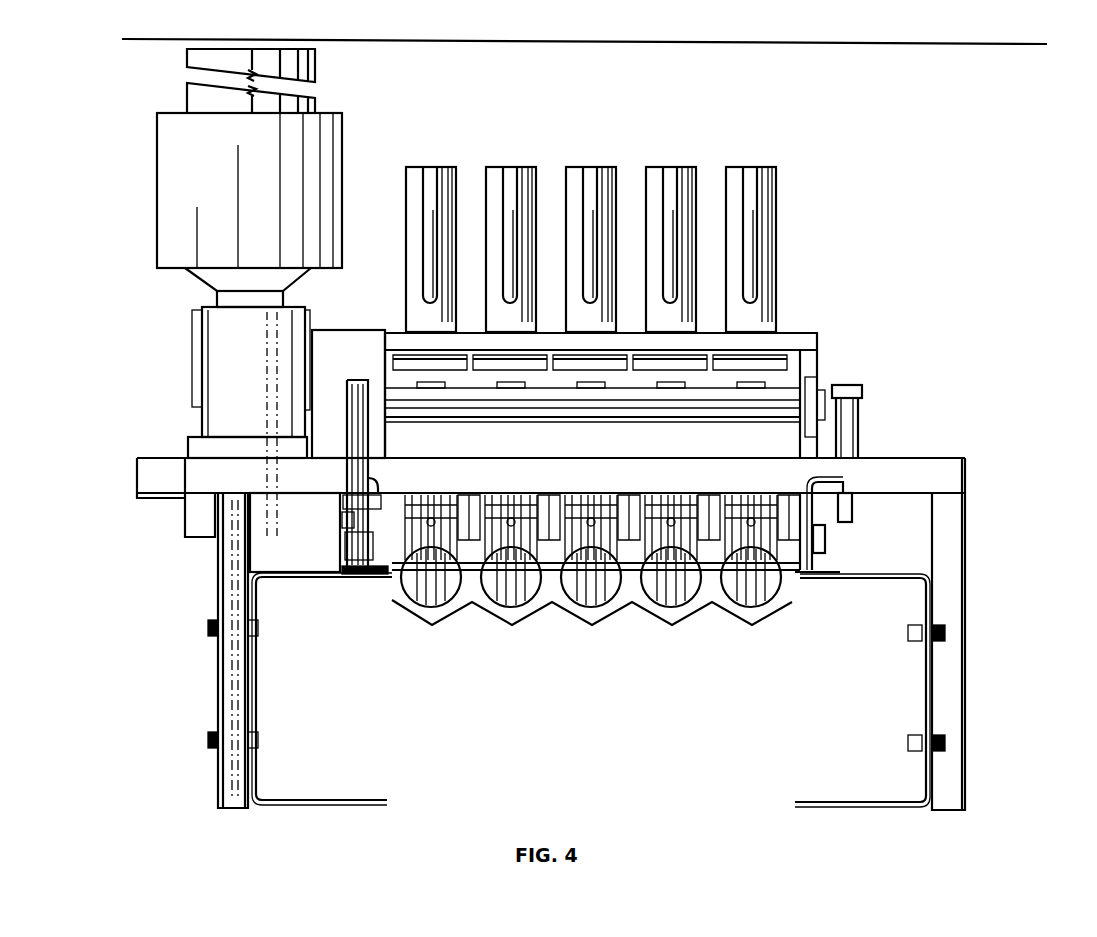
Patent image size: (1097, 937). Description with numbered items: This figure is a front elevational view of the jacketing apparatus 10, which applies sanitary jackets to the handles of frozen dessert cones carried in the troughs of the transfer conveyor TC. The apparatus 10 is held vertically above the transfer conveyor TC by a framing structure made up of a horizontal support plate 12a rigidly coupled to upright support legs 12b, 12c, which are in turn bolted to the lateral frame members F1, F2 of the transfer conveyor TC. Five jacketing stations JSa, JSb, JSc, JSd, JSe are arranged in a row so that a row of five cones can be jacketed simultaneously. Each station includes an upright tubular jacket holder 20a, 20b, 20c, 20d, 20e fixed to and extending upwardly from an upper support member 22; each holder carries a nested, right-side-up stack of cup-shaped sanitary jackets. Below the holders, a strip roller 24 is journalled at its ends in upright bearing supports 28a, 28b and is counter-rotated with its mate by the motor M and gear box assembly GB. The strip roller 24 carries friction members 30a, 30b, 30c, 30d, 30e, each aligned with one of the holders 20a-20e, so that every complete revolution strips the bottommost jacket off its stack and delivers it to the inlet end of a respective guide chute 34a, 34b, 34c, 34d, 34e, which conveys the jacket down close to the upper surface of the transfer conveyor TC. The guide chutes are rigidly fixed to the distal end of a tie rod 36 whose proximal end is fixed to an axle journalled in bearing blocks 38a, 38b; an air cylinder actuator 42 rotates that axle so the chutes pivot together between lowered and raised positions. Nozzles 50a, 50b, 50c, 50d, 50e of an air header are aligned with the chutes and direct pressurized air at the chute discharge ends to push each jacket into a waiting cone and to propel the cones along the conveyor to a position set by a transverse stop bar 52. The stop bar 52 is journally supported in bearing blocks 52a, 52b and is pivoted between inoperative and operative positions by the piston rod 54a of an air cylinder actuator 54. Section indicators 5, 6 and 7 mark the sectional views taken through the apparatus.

The jacketing apparatus 10 is at (1055, 276).
The section line 7 is at (137, 28).
The section line 5 is at (337, 688).
The section line 6 is at (883, 407).
The motor M is at (249, 190).
The gear box assembly GB is at (251, 423).
The jacketing station JSa is at (433, 165).
The jacketing station JSb is at (513, 165).
The jacketing station JSc is at (593, 165).
The jacketing station JSd is at (671, 165).
The jacketing station JSe is at (758, 165).
The tubular jacket holder 20a is at (450, 330).
The tubular jacket holder 20b is at (530, 330).
The tubular jacket holder 20c is at (610, 330).
The tubular jacket holder 20d is at (690, 330).
The tubular jacket holder 20e is at (770, 330).
The upper support member 22 is at (805, 341).
The strip roller 24 is at (592, 405).
The upright bearing support 28a is at (815, 428).
The upright bearing support 28b is at (348, 394).
The friction member 30a is at (427, 389).
The friction member 30b is at (507, 389).
The friction member 30c is at (587, 389).
The friction member 30d is at (667, 389).
The friction member 30e is at (747, 389).
The air cylinder actuator 42 is at (863, 391).
The tie rod 36 is at (838, 497).
The horizontal support plate 12a is at (551, 497).
The upright support leg 12b is at (226, 661).
The upright support leg 12c is at (958, 592).
The nozzle 50a is at (433, 498).
The nozzle 50b is at (511, 498).
The nozzle 50c is at (592, 498).
The nozzle 50d is at (672, 498).
The nozzle 50e is at (752, 498).
The air cylinder actuator 54 is at (349, 395).
The piston rod 54a is at (352, 496).
The bearing block 38a is at (852, 511).
The bearing block 38b is at (344, 517).
The stop bar 52 is at (393, 574).
The bearing block 52a is at (826, 539).
The bearing block 52b is at (348, 542).
The guide chute 34a is at (434, 608).
The guide chute 34b is at (512, 608).
The guide chute 34c is at (593, 608).
The guide chute 34d is at (673, 608).
The guide chute 34e is at (753, 608).
The transfer conveyor TC is at (619, 622).
The lateral frame member F1 is at (262, 706).
The lateral frame member F2 is at (924, 708).